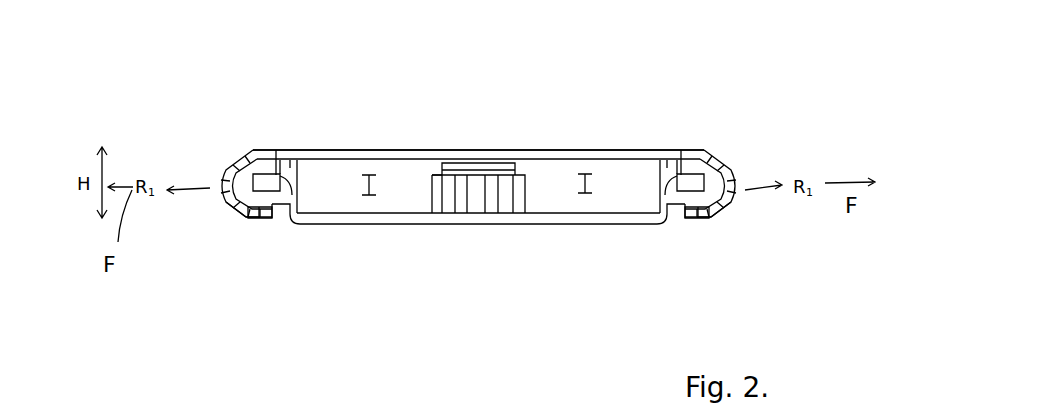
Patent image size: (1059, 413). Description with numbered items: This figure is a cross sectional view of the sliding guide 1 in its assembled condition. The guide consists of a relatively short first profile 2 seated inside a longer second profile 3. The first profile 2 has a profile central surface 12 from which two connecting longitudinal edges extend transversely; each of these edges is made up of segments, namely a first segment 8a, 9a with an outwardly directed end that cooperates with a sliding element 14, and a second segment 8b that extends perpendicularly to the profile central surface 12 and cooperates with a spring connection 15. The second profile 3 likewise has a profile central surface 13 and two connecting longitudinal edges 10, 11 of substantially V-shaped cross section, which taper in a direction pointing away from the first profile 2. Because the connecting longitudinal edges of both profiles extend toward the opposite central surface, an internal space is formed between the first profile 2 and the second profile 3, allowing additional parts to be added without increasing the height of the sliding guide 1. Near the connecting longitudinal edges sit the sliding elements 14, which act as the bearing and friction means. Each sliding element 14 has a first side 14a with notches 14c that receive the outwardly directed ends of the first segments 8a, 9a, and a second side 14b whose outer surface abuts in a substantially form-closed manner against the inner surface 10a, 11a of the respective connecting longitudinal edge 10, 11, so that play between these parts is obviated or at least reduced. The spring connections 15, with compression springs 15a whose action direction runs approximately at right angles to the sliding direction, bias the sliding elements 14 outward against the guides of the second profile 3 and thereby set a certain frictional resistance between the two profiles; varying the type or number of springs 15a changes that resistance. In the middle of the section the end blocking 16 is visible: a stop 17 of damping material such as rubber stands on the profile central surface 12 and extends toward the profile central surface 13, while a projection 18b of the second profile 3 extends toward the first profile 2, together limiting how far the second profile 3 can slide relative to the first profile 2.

The sliding guide 1 is at (371, 57).
The first profile 2 is at (568, 218).
The second profile 3 is at (564, 160).
The first segment 8a is at (280, 202).
The second segment 8b is at (313, 153).
The first segment 9a is at (700, 152).
The connecting longitudinal edge 10 is at (230, 206).
The inner surface 10a is at (264, 218).
The connecting longitudinal edge 11 is at (719, 214).
The inner surface 11a is at (700, 212).
The profile central surface 12 is at (525, 218).
The profile central surface 13 is at (541, 158).
The sliding element 14 is at (243, 150).
The first side 14a is at (285, 153).
The second side 14b is at (226, 193).
The notch 14c is at (252, 150).
The spring connection 15 is at (285, 215).
The spring 15a is at (273, 152).
The end blocking 16 is at (423, 181).
The stop 17 is at (478, 197).
The projection 18b is at (478, 165).